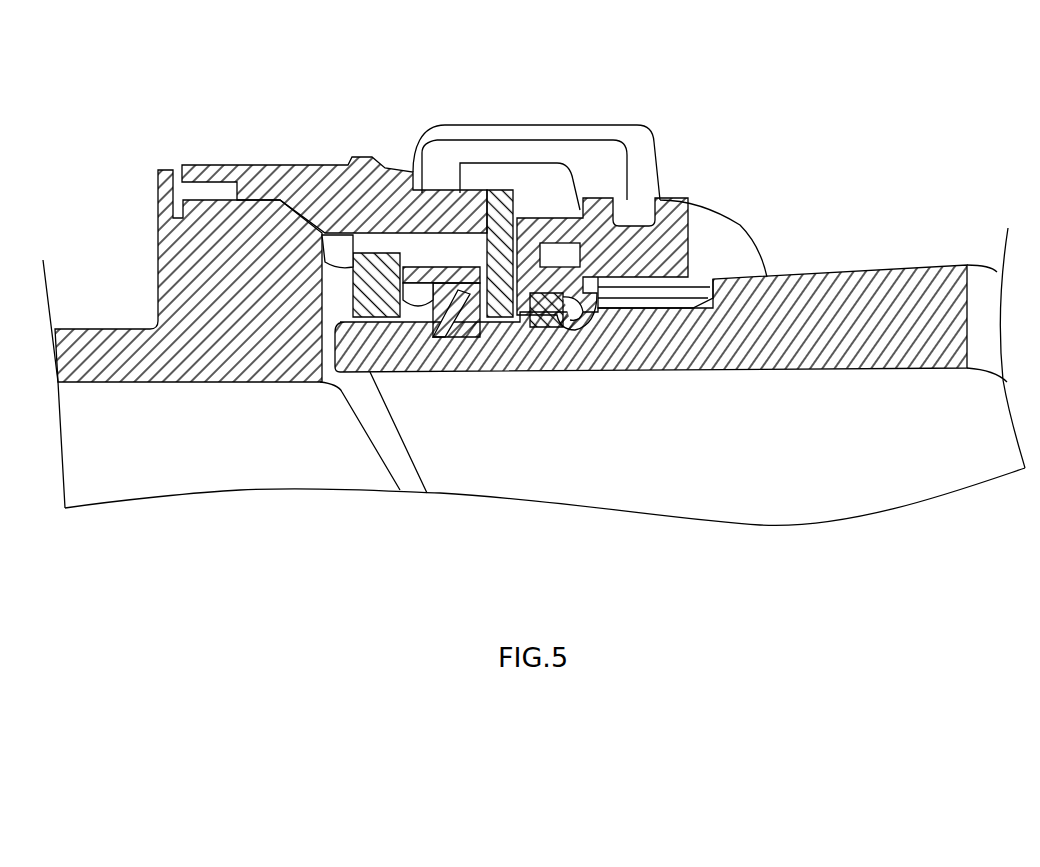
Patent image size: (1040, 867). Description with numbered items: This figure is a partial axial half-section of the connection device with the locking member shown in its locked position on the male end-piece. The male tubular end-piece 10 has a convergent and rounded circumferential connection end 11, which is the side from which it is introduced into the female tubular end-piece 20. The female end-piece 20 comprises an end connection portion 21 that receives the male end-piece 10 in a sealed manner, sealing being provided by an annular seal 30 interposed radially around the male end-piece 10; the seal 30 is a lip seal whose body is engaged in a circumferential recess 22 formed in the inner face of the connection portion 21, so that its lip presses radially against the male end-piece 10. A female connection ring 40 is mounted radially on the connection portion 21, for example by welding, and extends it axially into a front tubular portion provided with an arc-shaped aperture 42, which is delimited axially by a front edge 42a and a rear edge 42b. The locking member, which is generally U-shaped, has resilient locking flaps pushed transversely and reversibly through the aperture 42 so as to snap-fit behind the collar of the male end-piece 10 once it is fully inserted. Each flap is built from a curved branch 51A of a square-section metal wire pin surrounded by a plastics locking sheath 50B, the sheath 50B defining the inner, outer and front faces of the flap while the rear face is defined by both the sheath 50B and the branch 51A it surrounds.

The male tubular end-piece 10 is at (860, 262).
The connection end 11 is at (323, 313).
The female tubular end-piece 20 is at (363, 300).
The end connection portion 21 is at (507, 245).
The circumferential recess 22 is at (428, 262).
The annular seal 30 is at (462, 330).
The female connection ring 40 is at (381, 146).
The aperture 42 is at (576, 253).
The front edge 42a is at (578, 207).
The rear edge 42b is at (527, 205).
The curved branch 51A is at (583, 330).
The plastics locking sheath 50B is at (620, 330).